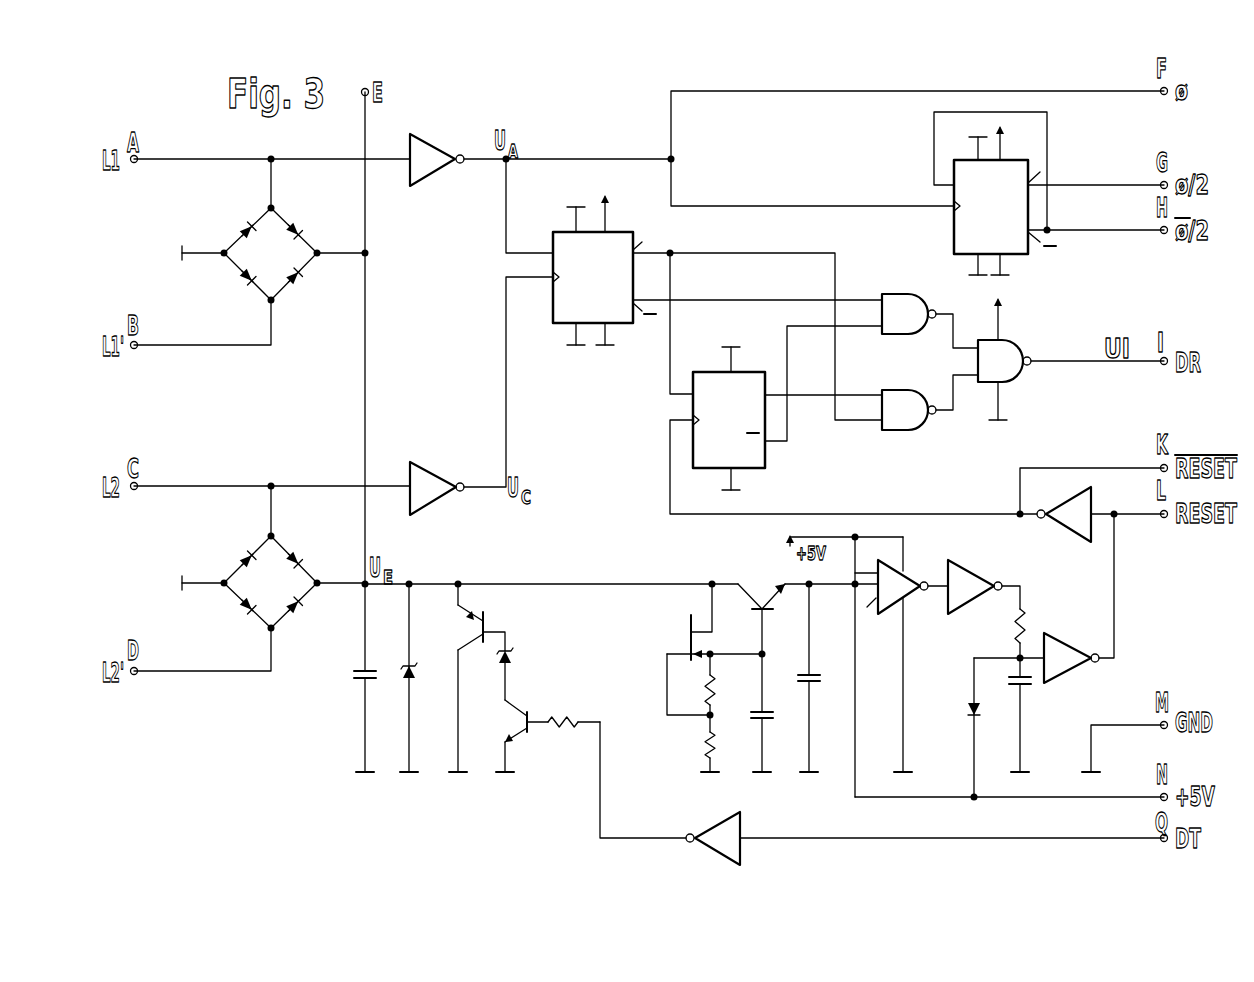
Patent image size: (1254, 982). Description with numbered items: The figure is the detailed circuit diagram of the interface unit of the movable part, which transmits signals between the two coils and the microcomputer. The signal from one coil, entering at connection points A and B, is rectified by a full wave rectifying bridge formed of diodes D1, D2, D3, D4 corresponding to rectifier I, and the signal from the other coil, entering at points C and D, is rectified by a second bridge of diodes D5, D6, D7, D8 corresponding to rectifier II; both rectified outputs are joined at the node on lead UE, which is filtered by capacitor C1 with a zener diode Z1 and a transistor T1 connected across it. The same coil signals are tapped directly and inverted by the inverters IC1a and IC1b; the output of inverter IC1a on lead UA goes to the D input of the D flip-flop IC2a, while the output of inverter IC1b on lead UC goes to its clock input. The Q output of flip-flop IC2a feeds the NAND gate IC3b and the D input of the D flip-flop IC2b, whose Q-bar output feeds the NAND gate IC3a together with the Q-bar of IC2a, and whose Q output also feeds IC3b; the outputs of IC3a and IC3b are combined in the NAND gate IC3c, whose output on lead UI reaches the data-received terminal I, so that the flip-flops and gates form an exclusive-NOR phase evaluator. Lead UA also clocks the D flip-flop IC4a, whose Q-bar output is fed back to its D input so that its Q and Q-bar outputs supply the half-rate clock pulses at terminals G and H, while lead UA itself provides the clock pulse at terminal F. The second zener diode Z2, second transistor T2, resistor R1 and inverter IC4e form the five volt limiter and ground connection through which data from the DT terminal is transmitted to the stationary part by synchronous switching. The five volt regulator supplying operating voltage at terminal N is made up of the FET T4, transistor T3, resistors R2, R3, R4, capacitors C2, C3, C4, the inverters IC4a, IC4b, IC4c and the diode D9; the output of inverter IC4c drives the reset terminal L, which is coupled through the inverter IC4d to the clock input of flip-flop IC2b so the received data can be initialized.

The rectifier diode D1 is at (300, 230).
The rectifier diode D2 is at (302, 278).
The rectifier diode D3 is at (241, 276).
The rectifier diode D4 is at (241, 228).
The rectifier diode D5 is at (300, 560).
The rectifier diode D6 is at (302, 607).
The rectifier diode D7 is at (241, 606).
The rectifier diode D8 is at (241, 559).
The diode D9 is at (975, 727).
The zener diode Z1 is at (420, 678).
The second zener diode Z2 is at (518, 672).
The transistor T1 is at (478, 678).
The second transistor T2 is at (508, 736).
The transistor T3 is at (761, 605).
The FET T4 is at (713, 649).
The resistor R1 is at (563, 705).
The resistor R2 is at (1033, 629).
The resistor R3 is at (725, 684).
The resistor R4 is at (723, 743).
The capacitor C1 is at (351, 678).
The capacitor C2 is at (816, 678).
The capacitor C3 is at (1028, 715).
The capacitor C4 is at (772, 713).
The inverter IC1a is at (440, 146).
The inverter IC1b is at (440, 474).
The D flip-flop IC2a is at (600, 257).
The D flip-flop IC2b is at (729, 404).
The NAND gate IC3a is at (906, 297).
The NAND gate IC3b is at (906, 394).
The NAND gate IC3c is at (1009, 355).
The D flip-flop IC4a is at (946, 441).
The inverter IC4b is at (980, 579).
The inverter IC4c is at (1074, 649).
The inverter IC4d is at (1057, 506).
The inverter IC4e is at (699, 829).